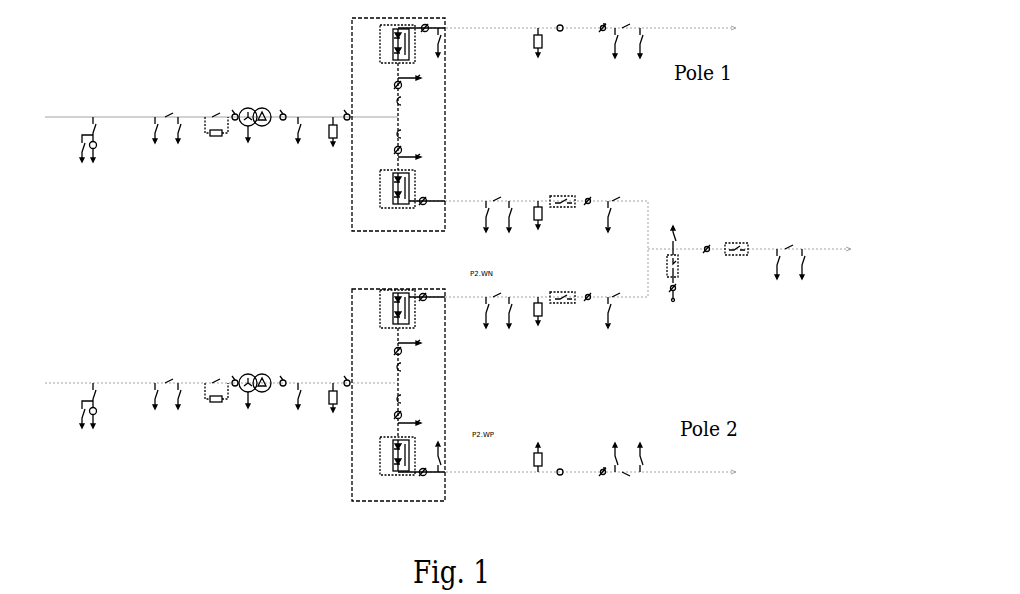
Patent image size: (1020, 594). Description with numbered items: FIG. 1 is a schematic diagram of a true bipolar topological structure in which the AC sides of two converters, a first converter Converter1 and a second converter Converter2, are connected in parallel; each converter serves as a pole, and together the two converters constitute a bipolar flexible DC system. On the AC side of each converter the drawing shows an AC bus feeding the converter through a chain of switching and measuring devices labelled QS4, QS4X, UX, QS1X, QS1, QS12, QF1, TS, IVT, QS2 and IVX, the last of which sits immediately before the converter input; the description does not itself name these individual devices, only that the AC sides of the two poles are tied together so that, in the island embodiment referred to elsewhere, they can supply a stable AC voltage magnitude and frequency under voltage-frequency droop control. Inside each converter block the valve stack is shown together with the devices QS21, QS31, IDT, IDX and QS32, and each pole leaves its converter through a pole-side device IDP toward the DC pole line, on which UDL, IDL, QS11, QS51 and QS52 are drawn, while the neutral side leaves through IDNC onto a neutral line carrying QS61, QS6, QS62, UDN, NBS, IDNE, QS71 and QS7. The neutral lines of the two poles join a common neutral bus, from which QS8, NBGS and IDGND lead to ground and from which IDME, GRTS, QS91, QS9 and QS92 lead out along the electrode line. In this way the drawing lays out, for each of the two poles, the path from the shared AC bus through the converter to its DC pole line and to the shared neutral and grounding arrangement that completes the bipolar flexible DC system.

The disconnector QS4 is at (274, 250).
The earthing switch QS4X is at (76, 281).
The voltage measuring device UX is at (219, 272).
The earthing switch QS1X is at (146, 263).
The disconnector QS1 is at (397, 251).
The earthing switch QS12 is at (419, 218).
The AC circuit breaker QF1 is at (216, 252).
The current transformer TS is at (232, 243).
The current measuring device IVT is at (282, 243).
The earthing switch QS2 is at (306, 263).
The current measuring device IVX is at (344, 243).
The converter Converter1 is at (398, 124).
The converter Converter2 is at (398, 395).
The earthing switch QS21 is at (420, 79).
The earthing switch QS31 is at (420, 344).
The DC current measuring device IDT is at (391, 218).
The DC current measuring device IDX is at (391, 283).
The earthing switch QS32 is at (420, 291).
The pole DC current measuring device IDP is at (421, 251).
The neutral DC current measuring device IDNC is at (427, 244).
The DC line voltage measuring device UDL is at (546, 250).
The DC line current measuring device IDL is at (602, 250).
The earthing switch QS11 is at (605, 43).
The earthing switch QS51 is at (605, 457).
The earthing switch QS52 is at (650, 457).
The earthing switch QS61 is at (477, 264).
The disconnector QS6 is at (499, 243).
The earthing switch QS62 is at (519, 264).
The neutral voltage measuring device UDN is at (546, 263).
The neutral bus switch NBS is at (562, 245).
The neutral current measuring device IDNE is at (589, 244).
The earthing switch QS71 is at (599, 264).
The disconnector QS7 is at (619, 243).
The disconnector QS8 is at (681, 237).
The neutral bus grounding switch NBGS is at (683, 266).
The ground current measuring device IDGND is at (685, 293).
The electrode line current measuring device IDME is at (705, 244).
The ground return transfer switch GRTS is at (736, 244).
The earthing switch QS91 is at (768, 264).
The disconnector QS9 is at (792, 243).
The earthing switch QS92 is at (812, 264).